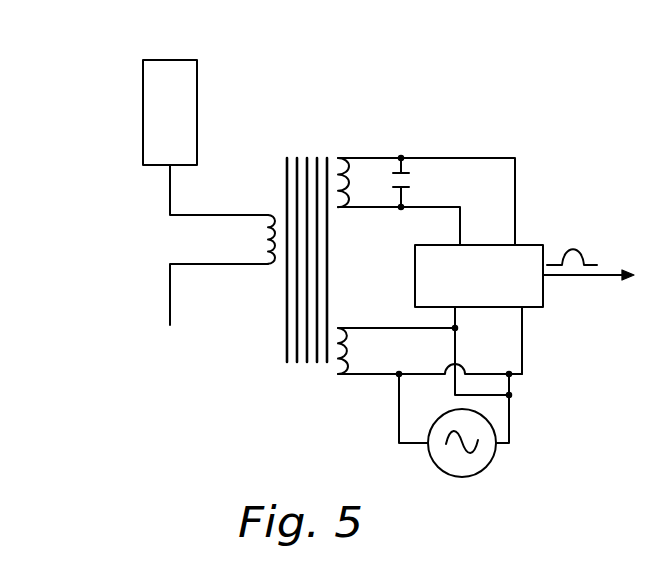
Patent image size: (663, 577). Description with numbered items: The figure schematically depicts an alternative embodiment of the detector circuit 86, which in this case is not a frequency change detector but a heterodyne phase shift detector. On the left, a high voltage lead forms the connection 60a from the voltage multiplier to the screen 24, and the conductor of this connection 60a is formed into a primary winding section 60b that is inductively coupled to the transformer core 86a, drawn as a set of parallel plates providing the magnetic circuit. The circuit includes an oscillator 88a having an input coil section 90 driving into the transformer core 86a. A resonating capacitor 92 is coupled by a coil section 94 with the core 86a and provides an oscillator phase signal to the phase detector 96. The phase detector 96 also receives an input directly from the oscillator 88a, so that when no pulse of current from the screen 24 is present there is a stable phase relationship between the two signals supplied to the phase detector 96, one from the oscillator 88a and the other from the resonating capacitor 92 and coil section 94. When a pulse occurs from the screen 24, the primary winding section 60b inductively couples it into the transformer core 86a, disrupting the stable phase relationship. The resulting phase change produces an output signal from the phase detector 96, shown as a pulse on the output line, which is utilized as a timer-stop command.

The screen 24 is at (143, 108).
The connection 60a is at (169, 288).
The primary winding section 60b is at (249, 239).
The detector circuit 86 is at (324, 145).
The transformer core 86a is at (296, 157).
The oscillator 88a is at (487, 466).
The input coil section 90 is at (340, 383).
The resonating capacitor 92 is at (421, 177).
The coil section 94 is at (357, 180).
The phase detector 96 is at (533, 250).